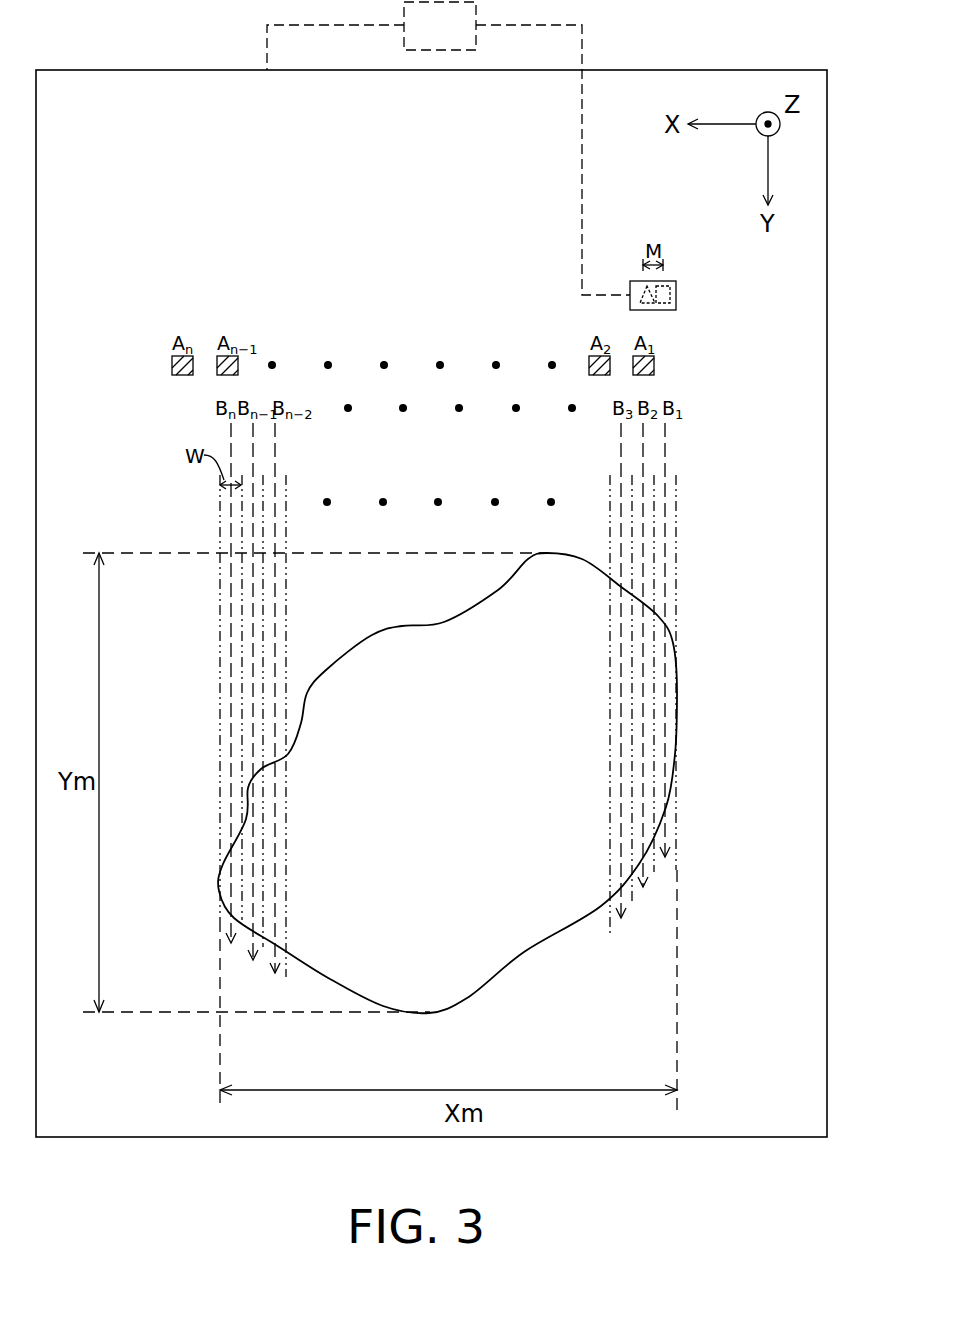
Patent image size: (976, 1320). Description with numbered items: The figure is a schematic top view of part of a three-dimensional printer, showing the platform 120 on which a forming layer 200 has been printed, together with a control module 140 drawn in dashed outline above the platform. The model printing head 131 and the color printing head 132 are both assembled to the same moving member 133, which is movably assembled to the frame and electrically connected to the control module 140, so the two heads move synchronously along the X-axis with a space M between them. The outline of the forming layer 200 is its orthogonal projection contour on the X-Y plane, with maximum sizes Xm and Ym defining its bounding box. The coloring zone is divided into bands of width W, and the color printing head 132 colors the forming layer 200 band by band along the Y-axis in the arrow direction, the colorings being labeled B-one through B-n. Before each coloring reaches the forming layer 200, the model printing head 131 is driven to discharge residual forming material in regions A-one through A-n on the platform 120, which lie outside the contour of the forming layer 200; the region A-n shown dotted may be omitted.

The platform 120 is at (170, 70).
The control module 140 is at (462, 42).
The model printing head 131 is at (636, 295).
The color printing head 132 is at (678, 297).
The moving member 133 is at (668, 286).
The forming layer 200 is at (709, 728).